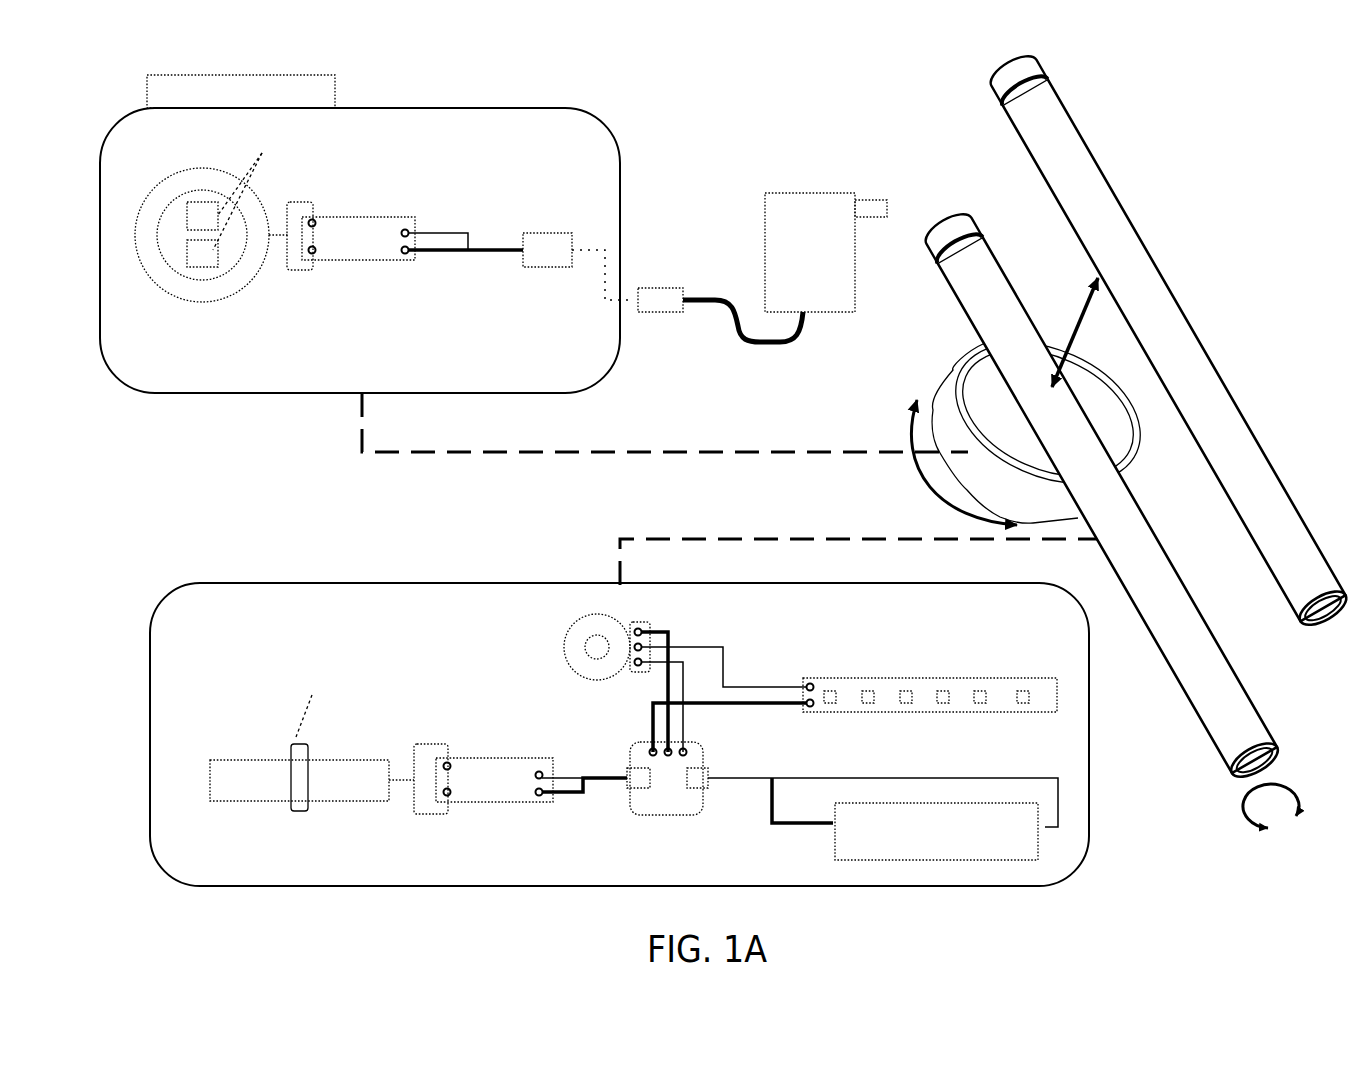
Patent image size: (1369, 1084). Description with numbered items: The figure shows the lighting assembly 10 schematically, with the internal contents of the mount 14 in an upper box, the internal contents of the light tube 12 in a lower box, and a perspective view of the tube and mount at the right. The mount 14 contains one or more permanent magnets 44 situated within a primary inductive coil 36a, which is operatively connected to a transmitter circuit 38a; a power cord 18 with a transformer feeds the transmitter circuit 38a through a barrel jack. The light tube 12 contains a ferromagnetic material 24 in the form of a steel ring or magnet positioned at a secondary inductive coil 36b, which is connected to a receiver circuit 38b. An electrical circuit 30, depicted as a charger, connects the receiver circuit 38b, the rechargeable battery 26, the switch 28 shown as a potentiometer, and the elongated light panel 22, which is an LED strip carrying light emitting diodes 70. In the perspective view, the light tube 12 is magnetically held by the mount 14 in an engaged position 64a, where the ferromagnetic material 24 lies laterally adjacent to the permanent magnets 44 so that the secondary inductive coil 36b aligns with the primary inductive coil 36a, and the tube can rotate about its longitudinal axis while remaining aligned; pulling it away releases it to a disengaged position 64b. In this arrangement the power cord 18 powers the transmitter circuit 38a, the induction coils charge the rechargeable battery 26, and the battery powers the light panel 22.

The lighting assembly 10 is at (1102, 60).
The light tube 12 is at (187, 610).
The mount 14 is at (556, 140).
The power cord 18 is at (695, 300).
The elongated light panel 22 is at (981, 745).
The ferromagnetic material 24 is at (301, 799).
The rechargeable battery 26 is at (1000, 850).
The switch 28 is at (596, 626).
The electrical circuit 30 is at (700, 800).
The primary inductive coil 36a is at (145, 240).
The secondary inductive coil 36b is at (356, 780).
The transmitter circuit 38a is at (367, 238).
The receiver circuit 38b is at (476, 768).
The permanent magnets 44 is at (198, 253).
The engaged position 64a is at (930, 180).
The disengaged position 64b is at (1016, 77).
The light emitting diodes 70 is at (977, 697).